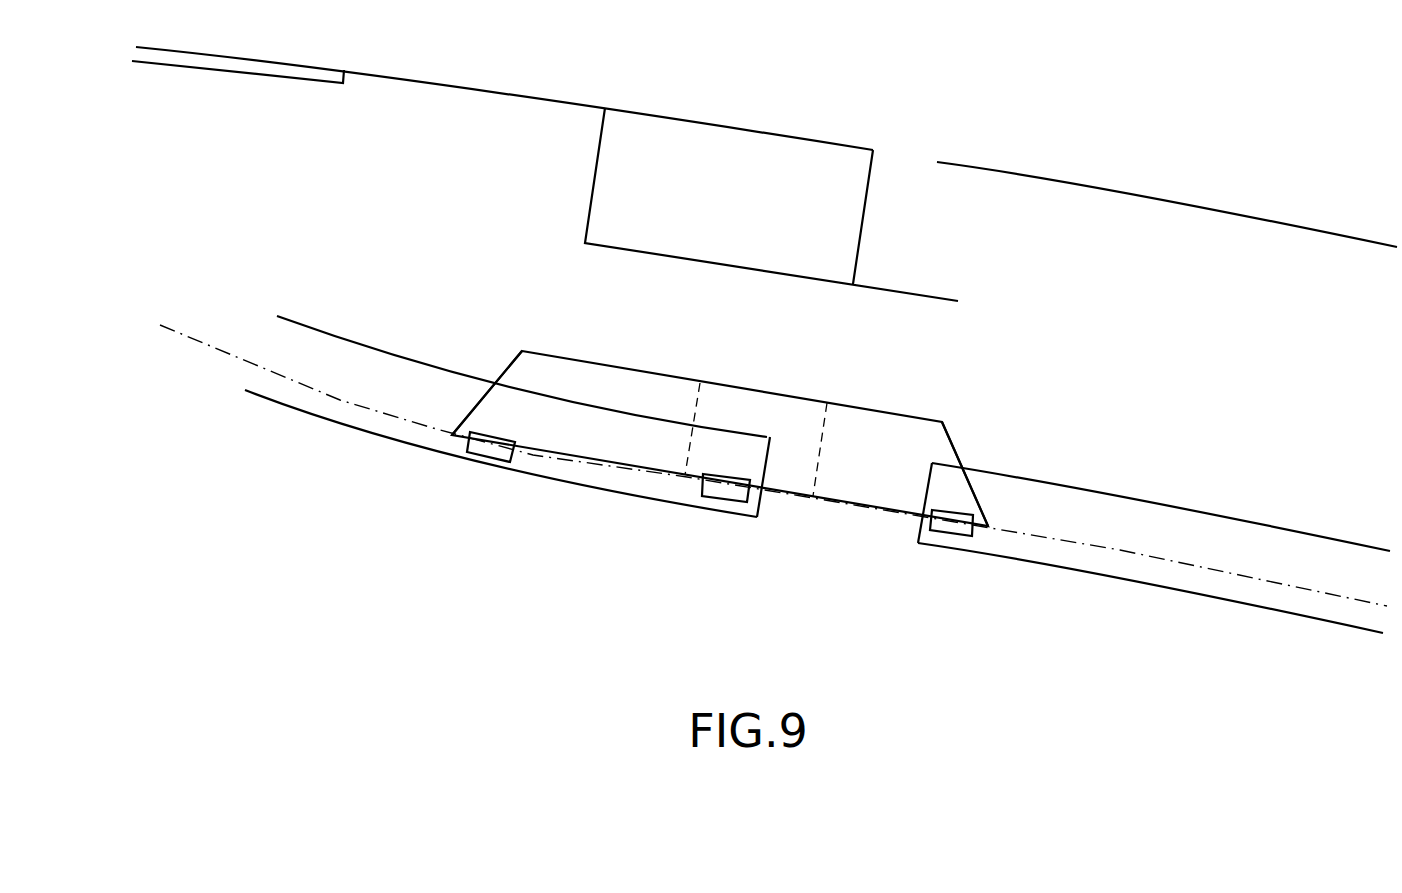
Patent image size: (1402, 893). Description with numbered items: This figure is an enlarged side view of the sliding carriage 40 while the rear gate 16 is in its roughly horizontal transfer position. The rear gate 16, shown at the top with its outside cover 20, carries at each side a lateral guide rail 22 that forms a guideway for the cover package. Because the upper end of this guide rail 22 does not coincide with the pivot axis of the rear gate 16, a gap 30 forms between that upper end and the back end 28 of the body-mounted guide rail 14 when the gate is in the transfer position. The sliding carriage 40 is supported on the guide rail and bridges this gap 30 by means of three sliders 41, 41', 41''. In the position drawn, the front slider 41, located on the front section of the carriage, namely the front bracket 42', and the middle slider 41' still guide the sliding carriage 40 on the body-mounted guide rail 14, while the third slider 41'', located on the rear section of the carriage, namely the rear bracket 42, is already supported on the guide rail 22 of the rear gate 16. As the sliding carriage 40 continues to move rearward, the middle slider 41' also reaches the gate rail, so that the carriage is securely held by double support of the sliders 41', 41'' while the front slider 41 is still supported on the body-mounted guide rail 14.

The body-mounted guide rail 14 is at (388, 433).
The rear gate 16 is at (1200, 178).
The outside cover 20 is at (1042, 177).
The lateral guide rail 22 is at (1172, 575).
The back end 28 is at (762, 508).
The gap 30 is at (840, 573).
The sliding carriage 40 is at (800, 392).
The front slider 41 is at (475, 507).
The middle slider 41' is at (697, 545).
The third slider 41'' is at (931, 587).
The rear bracket 42 is at (957, 440).
The front bracket 42' is at (523, 364).